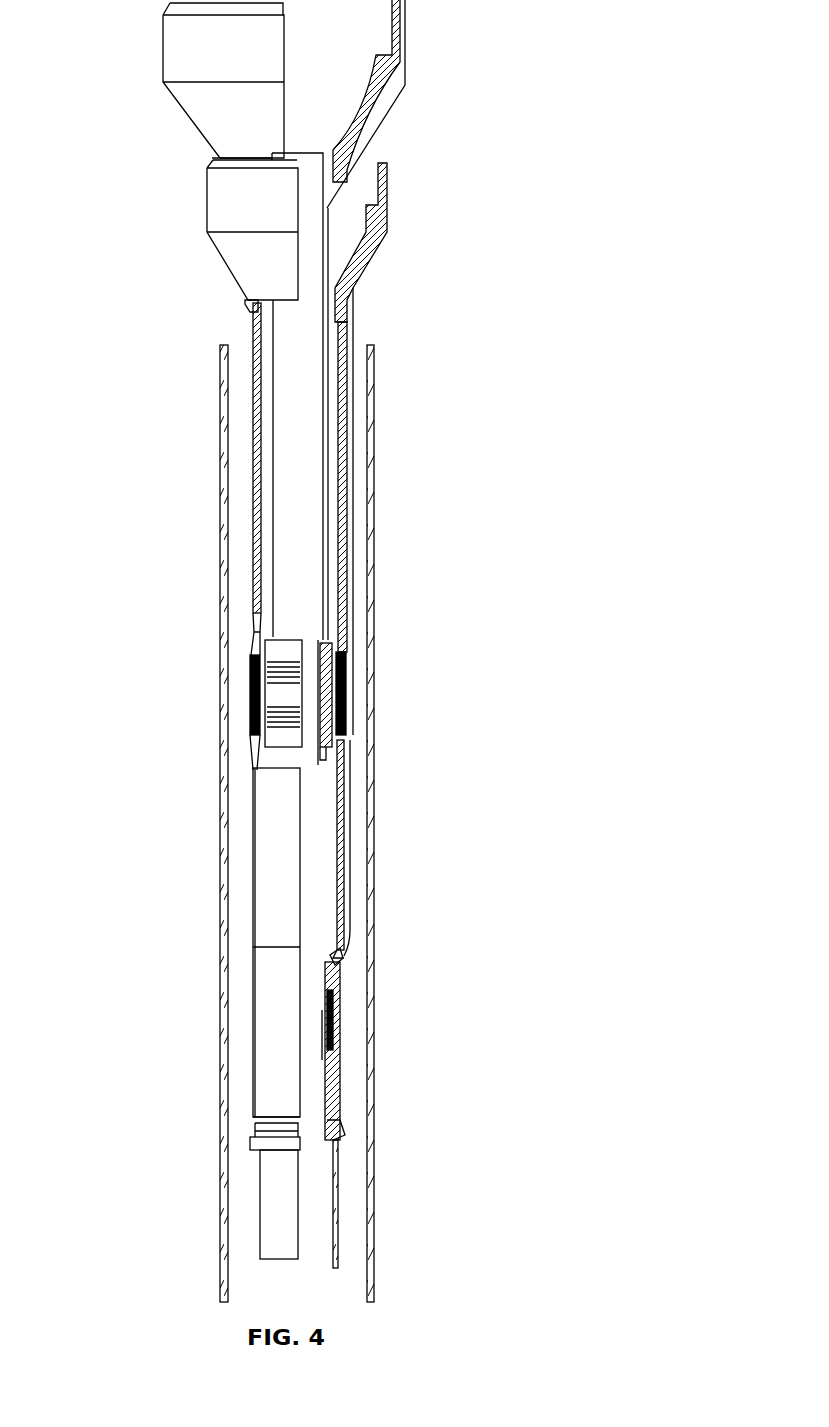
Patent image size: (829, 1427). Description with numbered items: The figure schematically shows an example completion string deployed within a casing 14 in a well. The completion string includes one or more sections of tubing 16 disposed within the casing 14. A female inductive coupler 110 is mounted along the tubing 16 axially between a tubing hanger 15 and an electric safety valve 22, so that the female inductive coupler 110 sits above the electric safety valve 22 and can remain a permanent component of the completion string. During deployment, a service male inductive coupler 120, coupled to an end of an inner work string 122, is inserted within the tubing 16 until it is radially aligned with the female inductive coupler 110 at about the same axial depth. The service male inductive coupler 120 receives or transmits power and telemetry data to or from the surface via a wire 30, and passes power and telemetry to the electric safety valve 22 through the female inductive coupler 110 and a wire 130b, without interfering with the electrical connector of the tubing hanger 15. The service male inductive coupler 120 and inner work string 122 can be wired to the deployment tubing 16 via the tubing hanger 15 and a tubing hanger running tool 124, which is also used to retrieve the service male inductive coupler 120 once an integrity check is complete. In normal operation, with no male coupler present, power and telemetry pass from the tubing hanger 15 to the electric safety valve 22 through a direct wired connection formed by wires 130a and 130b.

The tubing hanger running tool 124 is at (120, 62).
The tubing hanger 15 is at (177, 202).
The wire 30 is at (328, 237).
The casing 14 is at (375, 385).
The inner work string 122 is at (287, 492).
The tubing 16 is at (258, 565).
The female inductive coupler 110 is at (255, 725).
The service male inductive coupler 120 is at (273, 653).
The wire 130a is at (353, 593).
The wire 130b is at (350, 860).
The electric safety valve 22 is at (350, 1052).